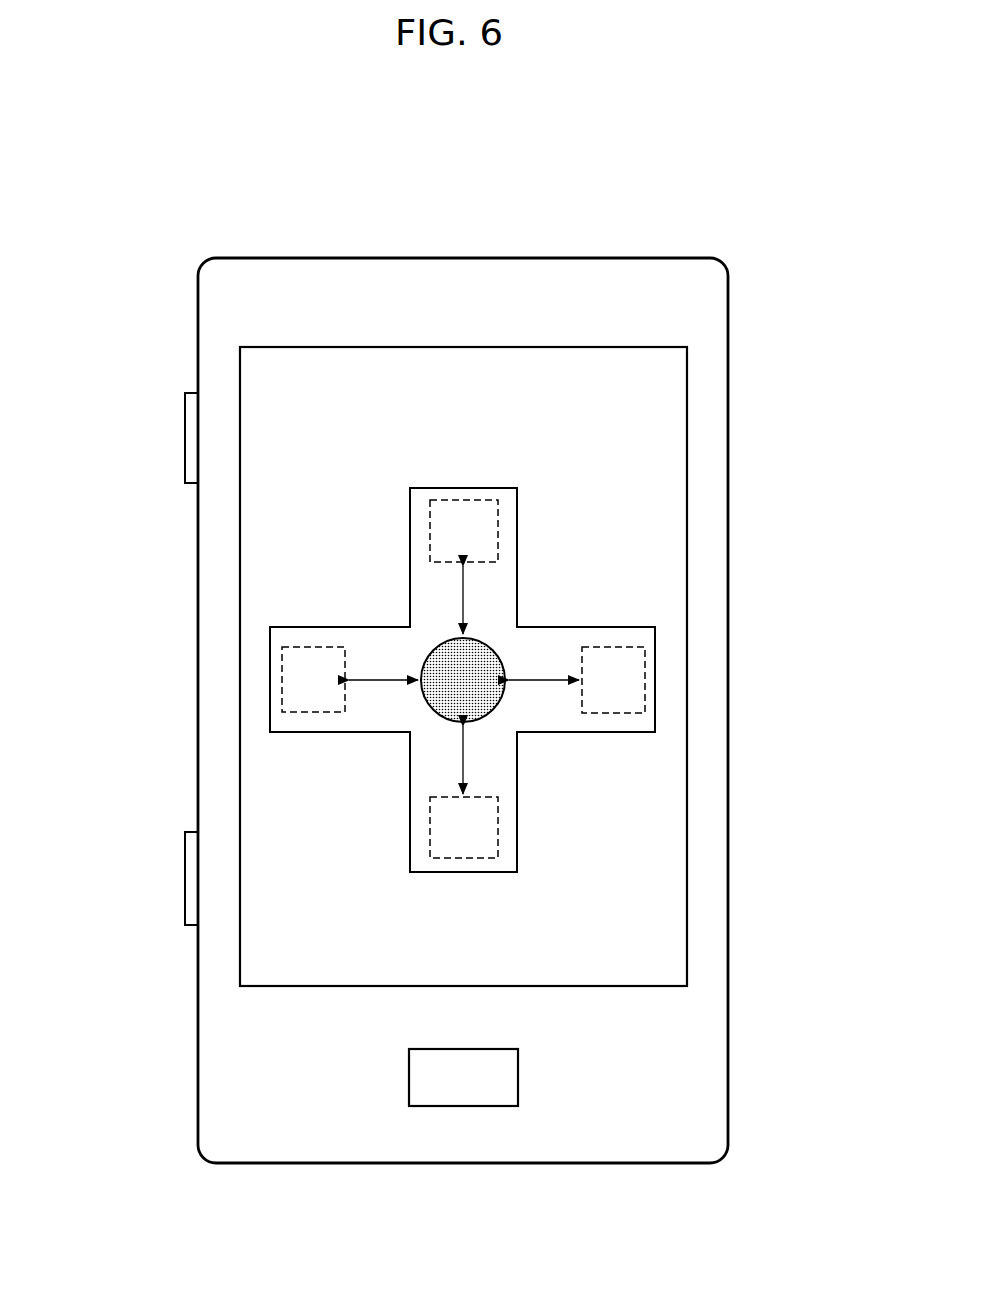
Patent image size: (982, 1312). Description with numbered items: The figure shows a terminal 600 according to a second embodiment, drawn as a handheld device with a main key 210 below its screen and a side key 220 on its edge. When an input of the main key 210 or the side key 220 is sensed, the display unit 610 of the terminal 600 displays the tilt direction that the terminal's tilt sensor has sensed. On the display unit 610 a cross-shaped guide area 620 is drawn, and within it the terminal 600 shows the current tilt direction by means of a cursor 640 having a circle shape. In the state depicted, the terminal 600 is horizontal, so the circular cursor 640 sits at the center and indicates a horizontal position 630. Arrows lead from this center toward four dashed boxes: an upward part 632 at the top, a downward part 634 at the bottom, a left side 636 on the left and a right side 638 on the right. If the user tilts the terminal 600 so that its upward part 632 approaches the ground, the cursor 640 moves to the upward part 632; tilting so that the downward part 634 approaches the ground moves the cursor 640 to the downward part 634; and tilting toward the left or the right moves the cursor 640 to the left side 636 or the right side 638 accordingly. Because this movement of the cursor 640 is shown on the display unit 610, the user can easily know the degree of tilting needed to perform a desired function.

The terminal 600 is at (463, 258).
The side key 220 is at (185, 433).
The display unit 610 is at (240, 537).
The cross-shaped guide area 620 is at (517, 770).
The horizontal position 630 is at (480, 658).
The upward part 632 is at (477, 525).
The downward part 634 is at (498, 825).
The left side 636 is at (282, 678).
The right side 638 is at (645, 665).
The cursor 640 is at (427, 660).
The main key 210 is at (520, 1075).